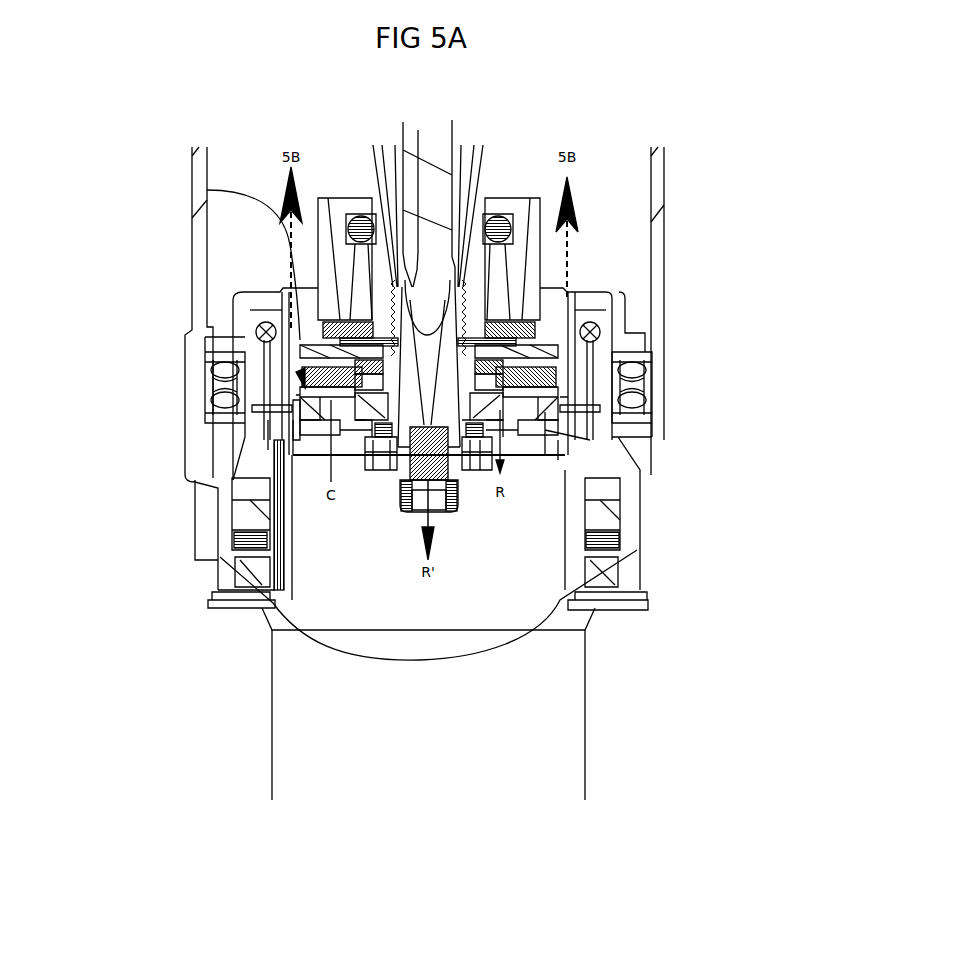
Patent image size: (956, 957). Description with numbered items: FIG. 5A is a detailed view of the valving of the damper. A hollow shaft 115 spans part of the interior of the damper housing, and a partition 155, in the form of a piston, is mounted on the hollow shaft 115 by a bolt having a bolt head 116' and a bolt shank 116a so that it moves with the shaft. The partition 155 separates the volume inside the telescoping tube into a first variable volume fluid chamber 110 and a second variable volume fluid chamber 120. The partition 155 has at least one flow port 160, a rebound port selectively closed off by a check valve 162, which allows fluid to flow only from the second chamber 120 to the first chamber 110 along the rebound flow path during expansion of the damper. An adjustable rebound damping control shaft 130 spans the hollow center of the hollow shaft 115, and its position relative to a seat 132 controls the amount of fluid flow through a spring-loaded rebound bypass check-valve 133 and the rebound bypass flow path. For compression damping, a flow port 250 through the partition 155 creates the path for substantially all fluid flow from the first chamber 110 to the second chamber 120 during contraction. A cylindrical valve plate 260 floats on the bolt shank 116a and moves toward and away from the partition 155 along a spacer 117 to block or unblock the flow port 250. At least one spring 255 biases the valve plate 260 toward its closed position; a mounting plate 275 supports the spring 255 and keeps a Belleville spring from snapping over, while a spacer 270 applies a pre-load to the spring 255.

The first variable volume fluid chamber 110 is at (362, 588).
The hollow shaft 115 is at (487, 153).
The bolt shank 116a is at (312, 300).
The bolt head 116' is at (446, 488).
The spacer 117 is at (507, 345).
The second variable volume fluid chamber 120 is at (207, 190).
The adjustable rebound damping control shaft 130 is at (437, 130).
The seat 132 is at (418, 130).
The spring-loaded rebound bypass check-valve 133 is at (401, 470).
The partition 155 is at (297, 413).
The flow port 160 is at (508, 418).
The check valve 162 is at (508, 415).
The flow port 250 is at (330, 365).
The spring 255 is at (560, 330).
The cylindrical valve plate 260 is at (535, 350).
The spacer 270 is at (300, 362).
The mounting plate 275 is at (520, 345).